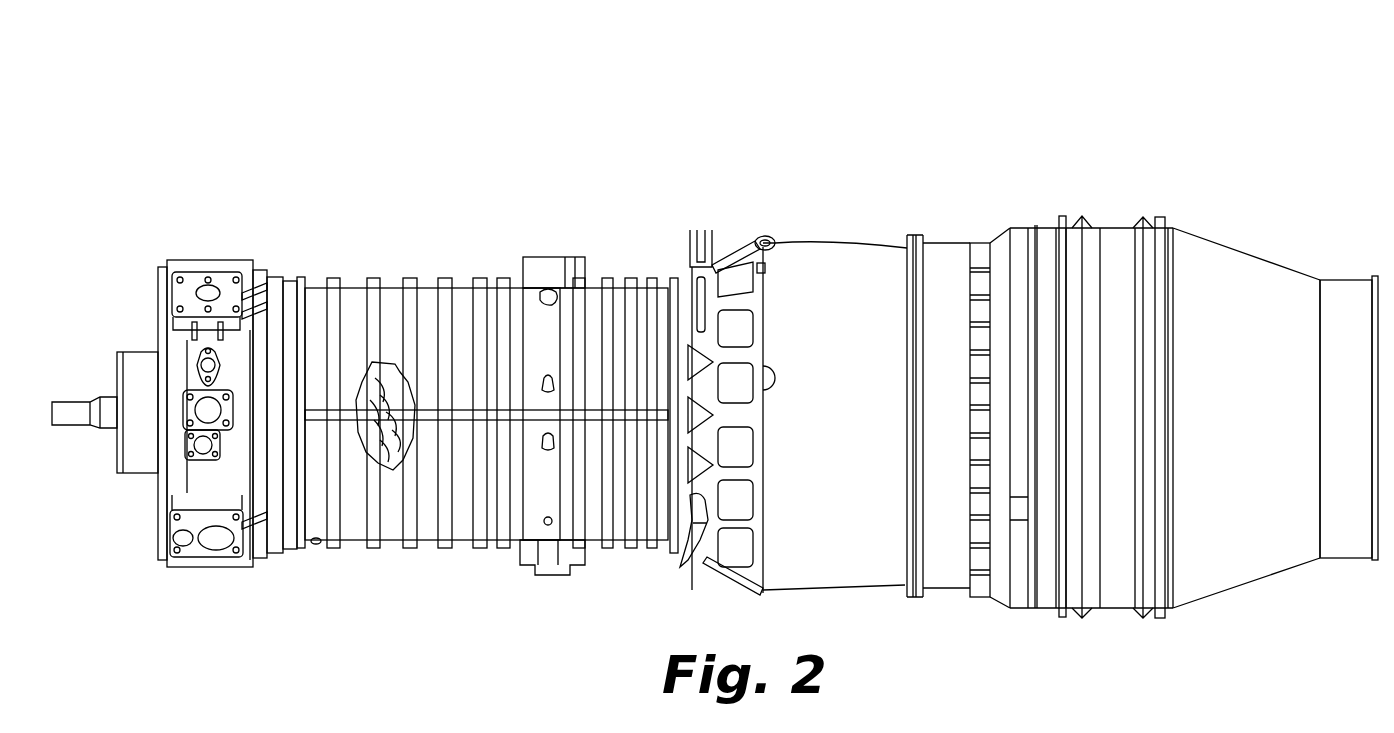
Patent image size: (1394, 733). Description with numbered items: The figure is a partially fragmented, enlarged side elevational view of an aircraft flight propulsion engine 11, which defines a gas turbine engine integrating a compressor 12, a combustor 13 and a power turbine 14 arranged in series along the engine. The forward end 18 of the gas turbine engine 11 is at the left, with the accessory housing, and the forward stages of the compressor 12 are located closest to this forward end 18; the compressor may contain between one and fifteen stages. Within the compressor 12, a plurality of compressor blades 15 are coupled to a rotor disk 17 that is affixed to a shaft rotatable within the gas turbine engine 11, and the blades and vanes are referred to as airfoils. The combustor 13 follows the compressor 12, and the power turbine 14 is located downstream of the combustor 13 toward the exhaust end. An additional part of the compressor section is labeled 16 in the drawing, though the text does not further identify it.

The aircraft flight propulsion engine 11 is at (715, 350).
The compressor 12 is at (388, 543).
The combustor 13 is at (843, 240).
The power turbine 14 is at (1120, 228).
The compressor blades 15 is at (405, 412).
The compressor rotor shaft 16 is at (433, 545).
The rotor disk 17 is at (380, 400).
The forward end 18 is at (168, 307).